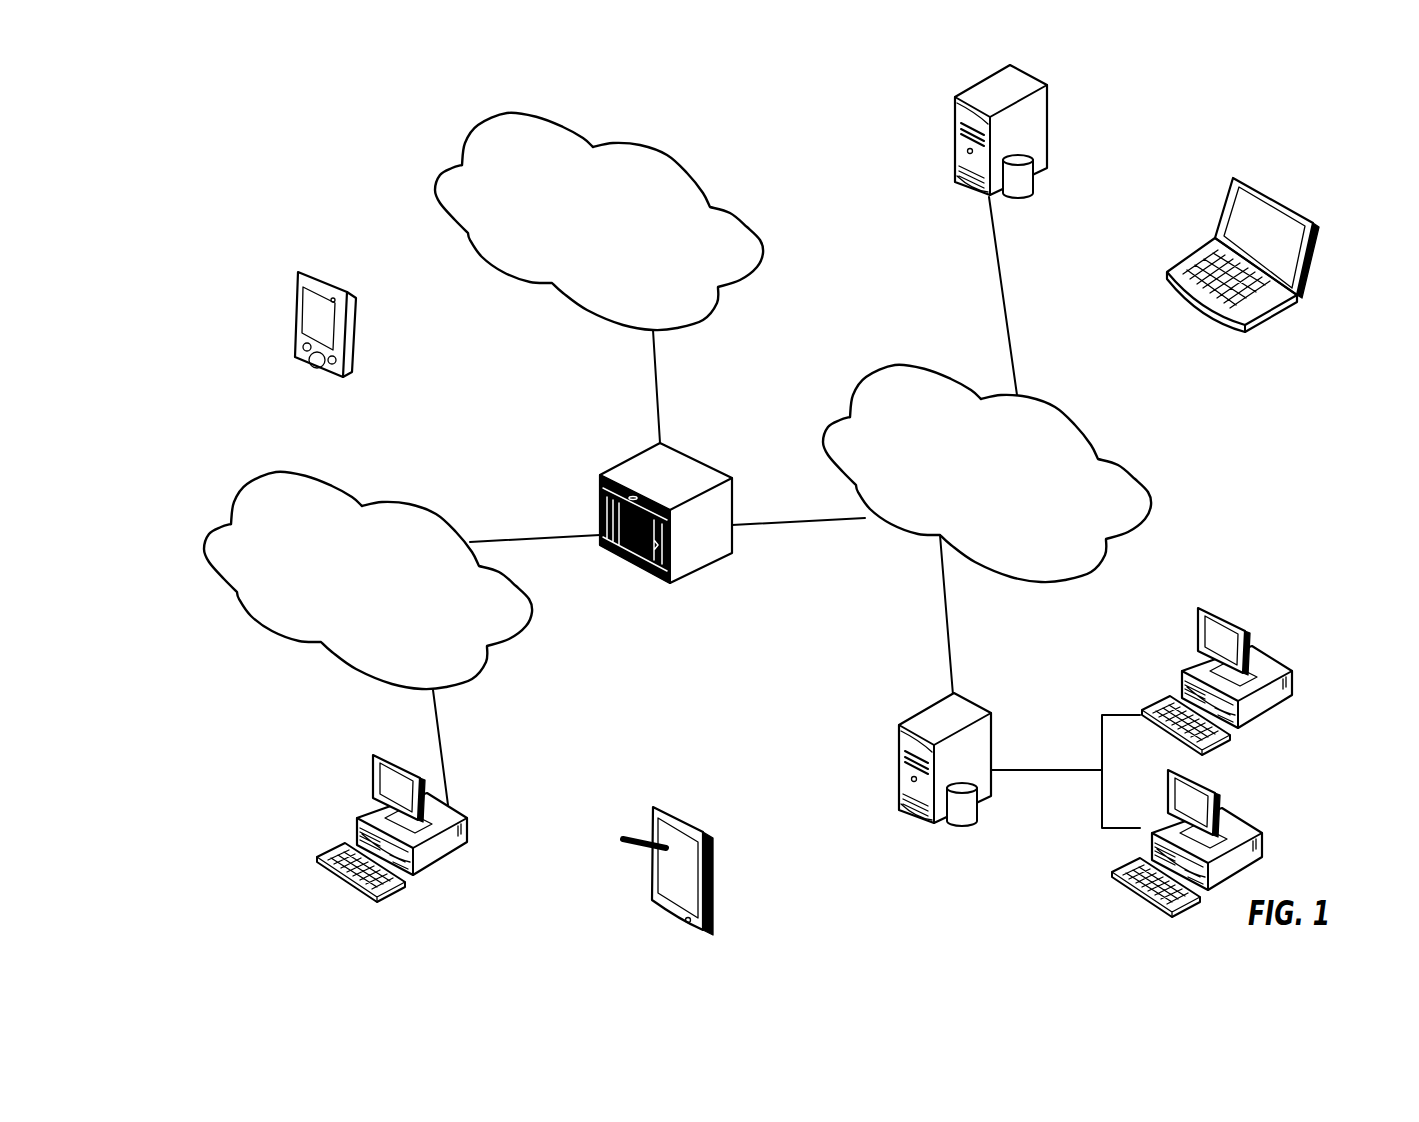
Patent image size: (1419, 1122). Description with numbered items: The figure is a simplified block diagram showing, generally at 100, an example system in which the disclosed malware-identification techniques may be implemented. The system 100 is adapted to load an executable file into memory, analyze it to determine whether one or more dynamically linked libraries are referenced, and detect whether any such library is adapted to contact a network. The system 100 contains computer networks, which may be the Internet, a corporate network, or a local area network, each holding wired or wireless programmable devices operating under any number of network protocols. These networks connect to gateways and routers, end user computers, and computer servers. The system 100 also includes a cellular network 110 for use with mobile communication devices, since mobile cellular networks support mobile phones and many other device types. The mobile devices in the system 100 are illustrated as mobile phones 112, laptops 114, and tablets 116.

The system 100 is at (1150, 163).
The cellular network 110 is at (662, 153).
The mobile phones 112 is at (295, 308).
The laptops 114 is at (1278, 308).
The tablets 116 is at (653, 808).